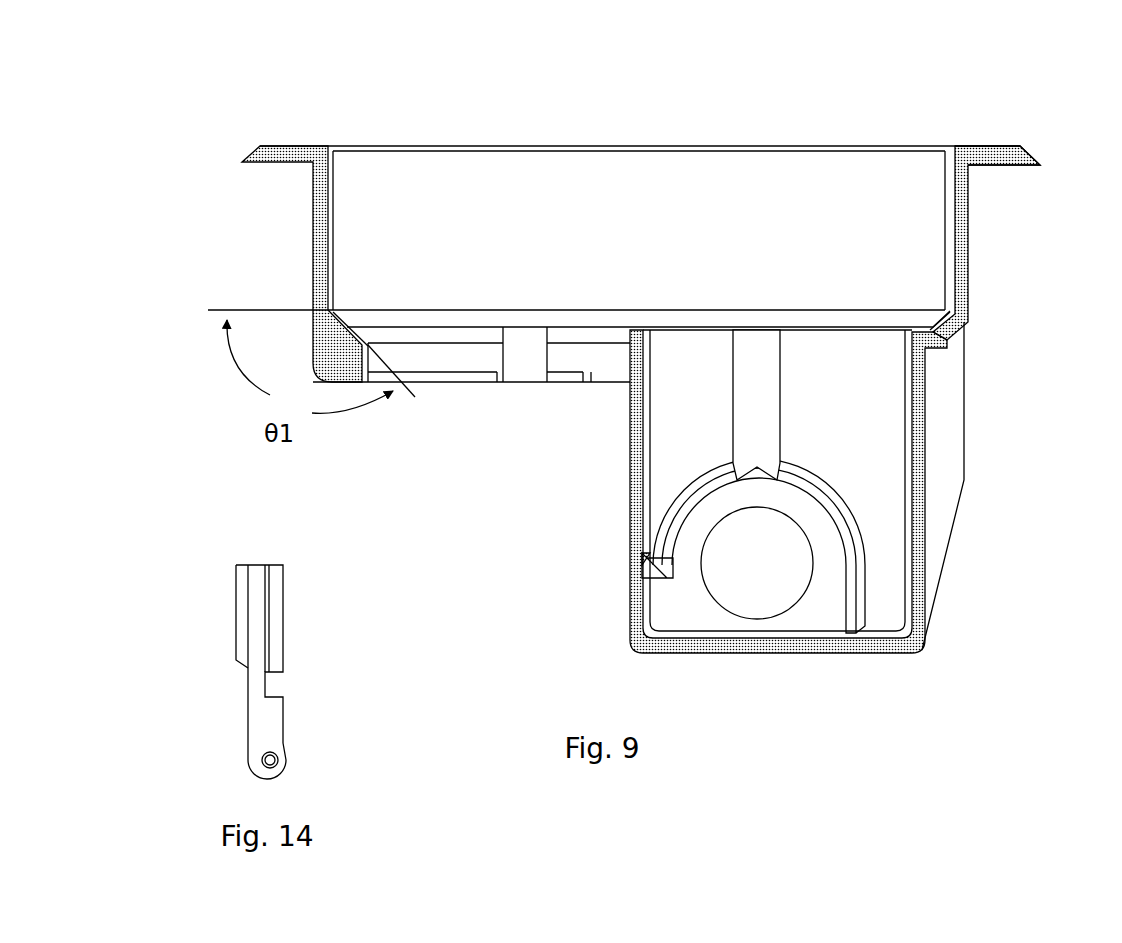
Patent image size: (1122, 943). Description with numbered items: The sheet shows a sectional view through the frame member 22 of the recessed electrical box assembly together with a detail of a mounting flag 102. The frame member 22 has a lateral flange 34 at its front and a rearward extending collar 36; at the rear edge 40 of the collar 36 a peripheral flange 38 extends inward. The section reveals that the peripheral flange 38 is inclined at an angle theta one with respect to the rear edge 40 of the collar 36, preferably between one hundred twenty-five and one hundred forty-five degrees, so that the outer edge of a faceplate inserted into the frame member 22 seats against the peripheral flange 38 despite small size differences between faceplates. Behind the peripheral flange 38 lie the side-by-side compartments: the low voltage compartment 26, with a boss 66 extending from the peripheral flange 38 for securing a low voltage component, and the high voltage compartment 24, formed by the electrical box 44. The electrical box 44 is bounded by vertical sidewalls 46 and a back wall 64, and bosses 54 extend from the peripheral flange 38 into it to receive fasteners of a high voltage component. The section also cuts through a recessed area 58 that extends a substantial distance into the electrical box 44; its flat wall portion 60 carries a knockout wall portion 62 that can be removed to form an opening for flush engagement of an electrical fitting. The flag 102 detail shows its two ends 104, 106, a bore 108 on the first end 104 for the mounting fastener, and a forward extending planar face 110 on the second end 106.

In FIG. 9, the frame member 22 is at (172, 138).
In FIG. 9, the high voltage compartment 24 is at (772, 318).
In FIG. 9, the low voltage compartment 26 is at (490, 327).
In FIG. 9, the lateral flange 34 is at (1020, 160).
In FIG. 9, the collar 36 is at (960, 230).
In FIG. 9, the peripheral flange 38 is at (336, 306).
In FIG. 9, the rear edge 40 is at (628, 310).
In FIG. 9, the electrical box 44 is at (777, 480).
In FIG. 9, the vertical sidewalls 46 is at (922, 478).
In FIG. 9, the bosses 54 is at (756, 405).
In FIG. 9, the recessed area 58 is at (780, 622).
In FIG. 9, the flat wall portion 60 is at (753, 536).
In FIG. 9, the knockout wall portion 62 is at (757, 563).
In FIG. 9, the back wall 64 is at (733, 647).
In FIG. 9, the boss 66 is at (525, 354).
In FIG. 14, the flag 102 is at (210, 579).
In FIG. 14, the end 104 is at (266, 782).
In FIG. 14, the end 106 is at (250, 565).
In FIG. 14, the bore 108 is at (273, 757).
In FIG. 14, the planar face 110 is at (284, 618).